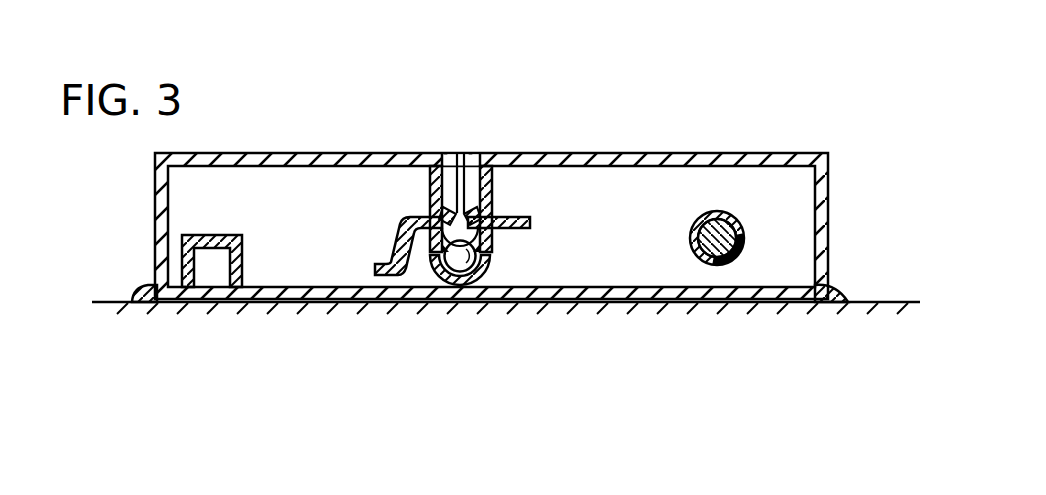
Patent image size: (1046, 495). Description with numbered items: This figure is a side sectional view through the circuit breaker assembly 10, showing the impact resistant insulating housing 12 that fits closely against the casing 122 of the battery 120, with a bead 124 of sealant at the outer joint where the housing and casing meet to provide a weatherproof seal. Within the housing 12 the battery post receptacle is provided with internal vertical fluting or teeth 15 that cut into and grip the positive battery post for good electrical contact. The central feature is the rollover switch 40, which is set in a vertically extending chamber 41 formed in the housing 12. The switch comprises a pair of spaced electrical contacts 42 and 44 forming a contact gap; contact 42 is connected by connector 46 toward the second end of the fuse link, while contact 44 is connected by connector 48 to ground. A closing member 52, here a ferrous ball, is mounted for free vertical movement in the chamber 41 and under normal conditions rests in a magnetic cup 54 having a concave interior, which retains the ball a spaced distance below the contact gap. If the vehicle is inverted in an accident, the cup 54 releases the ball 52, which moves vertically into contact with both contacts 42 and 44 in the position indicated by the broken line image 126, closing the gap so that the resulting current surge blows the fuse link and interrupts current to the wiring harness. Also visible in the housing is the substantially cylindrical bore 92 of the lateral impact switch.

The circuit breaker assembly 10 is at (776, 127).
The housing 12 is at (811, 151).
The internal vertical fluting or teeth 15 is at (700, 242).
The rollover switch 40 is at (545, 223).
The chamber 41 is at (491, 203).
The electrical contact 42 is at (444, 211).
The electrical contact 44 is at (496, 215).
The connector 46 is at (374, 265).
The connector 48 is at (520, 218).
The closing member 52 is at (462, 272).
The cup 54 is at (486, 272).
The cylindrical bore 92 is at (218, 235).
The battery 120 is at (857, 290).
The casing 122 is at (880, 299).
The bead of sealant 124 is at (148, 288).
The broken line image 126 is at (458, 166).